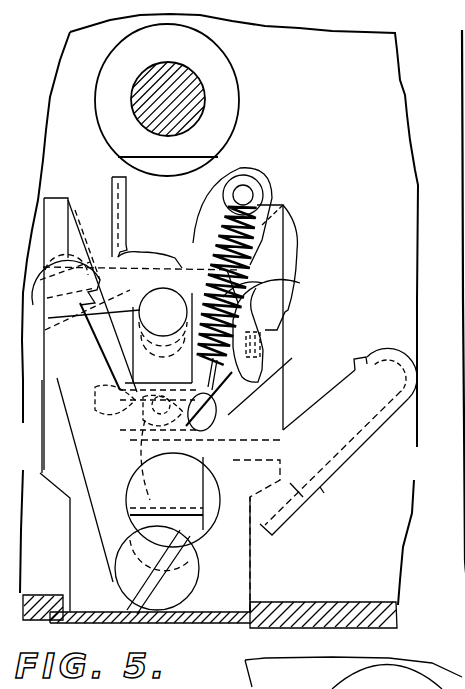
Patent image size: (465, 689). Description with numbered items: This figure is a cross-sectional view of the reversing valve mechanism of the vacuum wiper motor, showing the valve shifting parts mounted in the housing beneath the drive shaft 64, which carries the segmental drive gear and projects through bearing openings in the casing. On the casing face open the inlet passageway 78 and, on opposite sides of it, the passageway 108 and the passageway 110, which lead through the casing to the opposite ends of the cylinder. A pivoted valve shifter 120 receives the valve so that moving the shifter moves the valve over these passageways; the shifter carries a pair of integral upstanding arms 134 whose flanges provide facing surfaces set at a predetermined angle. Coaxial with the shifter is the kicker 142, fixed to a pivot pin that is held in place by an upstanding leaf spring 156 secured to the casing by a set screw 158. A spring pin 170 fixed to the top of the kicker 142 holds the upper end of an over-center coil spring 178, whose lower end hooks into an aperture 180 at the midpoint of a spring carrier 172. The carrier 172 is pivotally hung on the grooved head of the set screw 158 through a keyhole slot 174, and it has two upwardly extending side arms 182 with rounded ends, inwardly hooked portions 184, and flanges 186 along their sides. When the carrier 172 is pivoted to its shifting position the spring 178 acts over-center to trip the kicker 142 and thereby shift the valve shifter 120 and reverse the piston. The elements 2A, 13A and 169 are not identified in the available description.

The housing 2A is at (386, 97).
The drive shaft 64 is at (196, 82).
The frame plate 13A is at (107, 180).
The bracket 169 is at (100, 174).
The leaf spring 156 is at (128, 192).
The kicker 142 is at (187, 237).
The spring pin 170 is at (253, 188).
The upstanding arms 134 is at (283, 257).
The over-center coil spring 178 is at (290, 277).
The aperture 180 is at (265, 365).
The inwardly hooked portions 184 is at (360, 357).
The valve shifter 120 is at (277, 342).
The passageway 110 is at (270, 405).
The side arms 182 is at (392, 465).
The flanges 186 is at (320, 487).
The spring carrier 172 is at (298, 488).
The inlet passageway 78 is at (230, 437).
The keyhole slot 174 is at (200, 527).
The passageway 108 is at (23, 540).
The set screw 158 is at (147, 622).